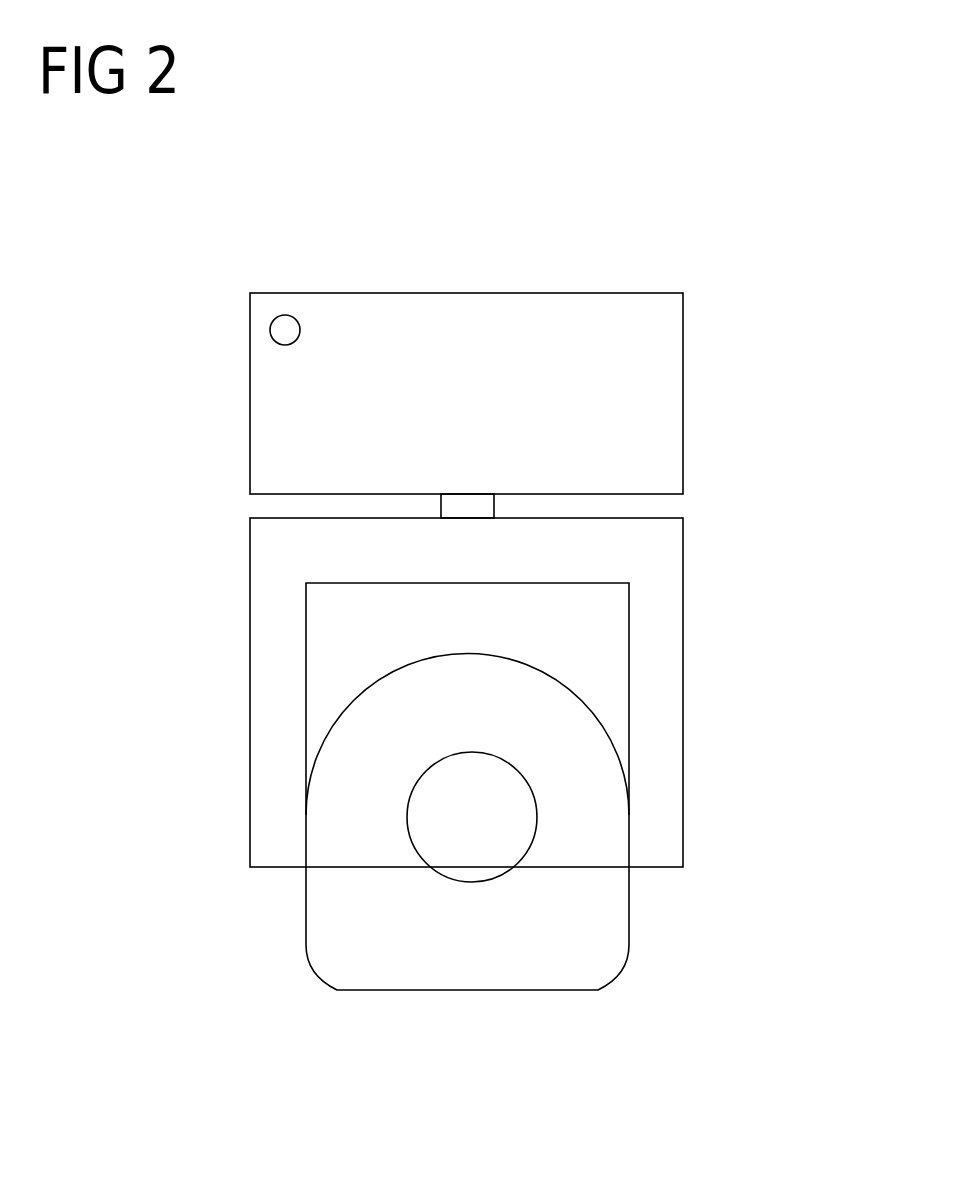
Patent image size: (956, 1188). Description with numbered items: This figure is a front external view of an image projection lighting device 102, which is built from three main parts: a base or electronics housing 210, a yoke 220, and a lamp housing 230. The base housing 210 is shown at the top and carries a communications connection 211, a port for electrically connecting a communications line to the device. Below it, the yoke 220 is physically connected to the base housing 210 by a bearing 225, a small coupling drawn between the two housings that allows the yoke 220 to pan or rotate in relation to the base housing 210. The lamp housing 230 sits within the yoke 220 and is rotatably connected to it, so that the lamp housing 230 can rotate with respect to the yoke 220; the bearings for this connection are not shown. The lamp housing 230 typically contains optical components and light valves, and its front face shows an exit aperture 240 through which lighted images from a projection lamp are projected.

The image projection lighting device 102 is at (778, 368).
The base or electronics housing 210 is at (313, 278).
The communications connection 211 is at (267, 336).
The yoke 220 is at (227, 707).
The bearing 225 is at (476, 492).
The lamp housing 230 is at (590, 688).
The exit aperture 240 is at (552, 807).